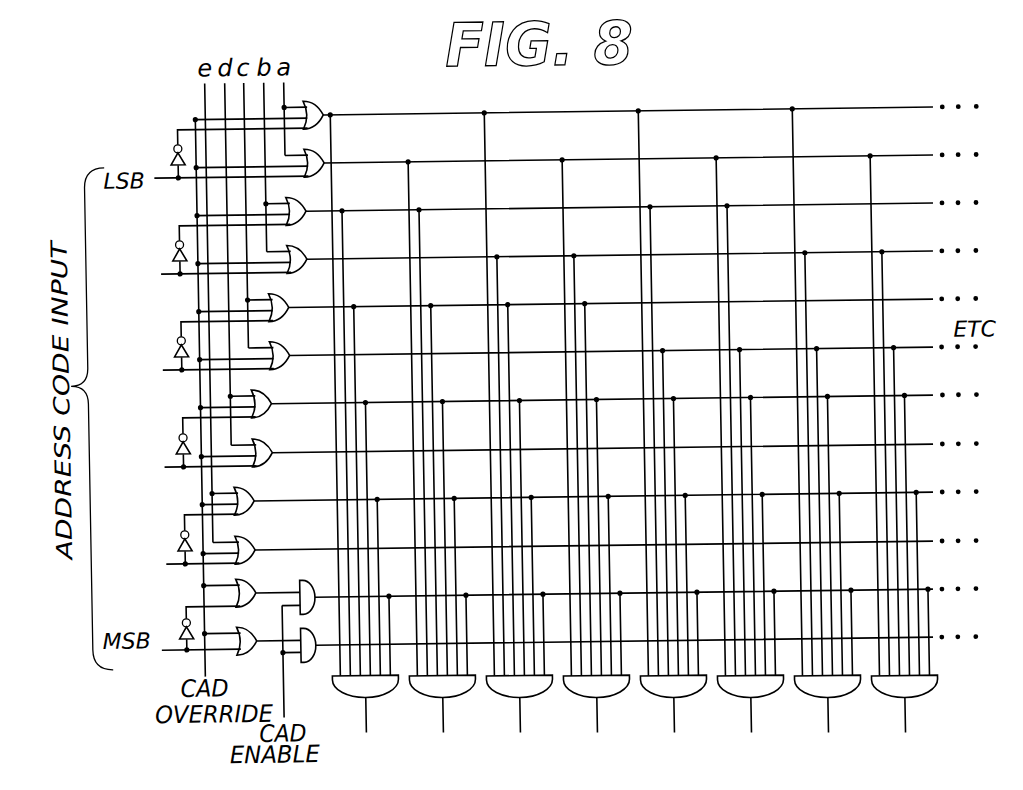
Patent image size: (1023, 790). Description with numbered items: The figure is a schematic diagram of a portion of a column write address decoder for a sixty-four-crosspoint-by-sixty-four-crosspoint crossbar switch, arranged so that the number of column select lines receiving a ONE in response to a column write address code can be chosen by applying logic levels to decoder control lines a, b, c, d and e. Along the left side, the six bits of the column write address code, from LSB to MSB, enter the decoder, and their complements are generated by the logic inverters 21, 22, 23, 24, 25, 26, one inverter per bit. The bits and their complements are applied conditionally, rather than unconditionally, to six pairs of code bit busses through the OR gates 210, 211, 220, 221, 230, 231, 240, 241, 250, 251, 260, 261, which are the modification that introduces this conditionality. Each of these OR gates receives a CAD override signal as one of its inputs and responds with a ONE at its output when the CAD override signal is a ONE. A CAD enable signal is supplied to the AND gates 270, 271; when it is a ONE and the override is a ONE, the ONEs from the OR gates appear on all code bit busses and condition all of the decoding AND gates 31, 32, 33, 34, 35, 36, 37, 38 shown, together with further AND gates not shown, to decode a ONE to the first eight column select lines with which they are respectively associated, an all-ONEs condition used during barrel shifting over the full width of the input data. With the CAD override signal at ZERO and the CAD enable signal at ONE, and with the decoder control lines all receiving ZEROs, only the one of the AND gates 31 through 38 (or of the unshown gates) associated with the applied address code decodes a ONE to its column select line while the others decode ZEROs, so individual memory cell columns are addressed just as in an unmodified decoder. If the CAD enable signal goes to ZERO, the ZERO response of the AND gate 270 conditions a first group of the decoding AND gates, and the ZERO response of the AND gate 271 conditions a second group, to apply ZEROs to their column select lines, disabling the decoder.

The logic inverter 21 is at (173, 145).
The logic inverter 22 is at (173, 243).
The logic inverter 23 is at (173, 339).
The logic inverter 24 is at (173, 438).
The logic inverter 25 is at (173, 533).
The logic inverter 26 is at (173, 621).
The OR gate 210 is at (310, 104).
The OR gate 211 is at (318, 148).
The OR gate 220 is at (300, 195).
The OR gate 221 is at (298, 245).
The OR gate 230 is at (278, 293).
The OR gate 231 is at (277, 341).
The OR gate 240 is at (265, 391).
The OR gate 241 is at (262, 441).
The OR gate 250 is at (246, 489).
The OR gate 251 is at (245, 538).
The OR gate 260 is at (249, 576).
The OR gate 261 is at (246, 623).
The AND gate 270 is at (304, 576).
The AND gate 271 is at (300, 664).
The AND gate 31 is at (369, 698).
The AND gate 32 is at (446, 699).
The AND gate 33 is at (523, 700).
The AND gate 34 is at (600, 701).
The AND gate 35 is at (677, 702).
The AND gate 36 is at (754, 703).
The AND gate 37 is at (831, 704).
The AND gate 38 is at (908, 705).